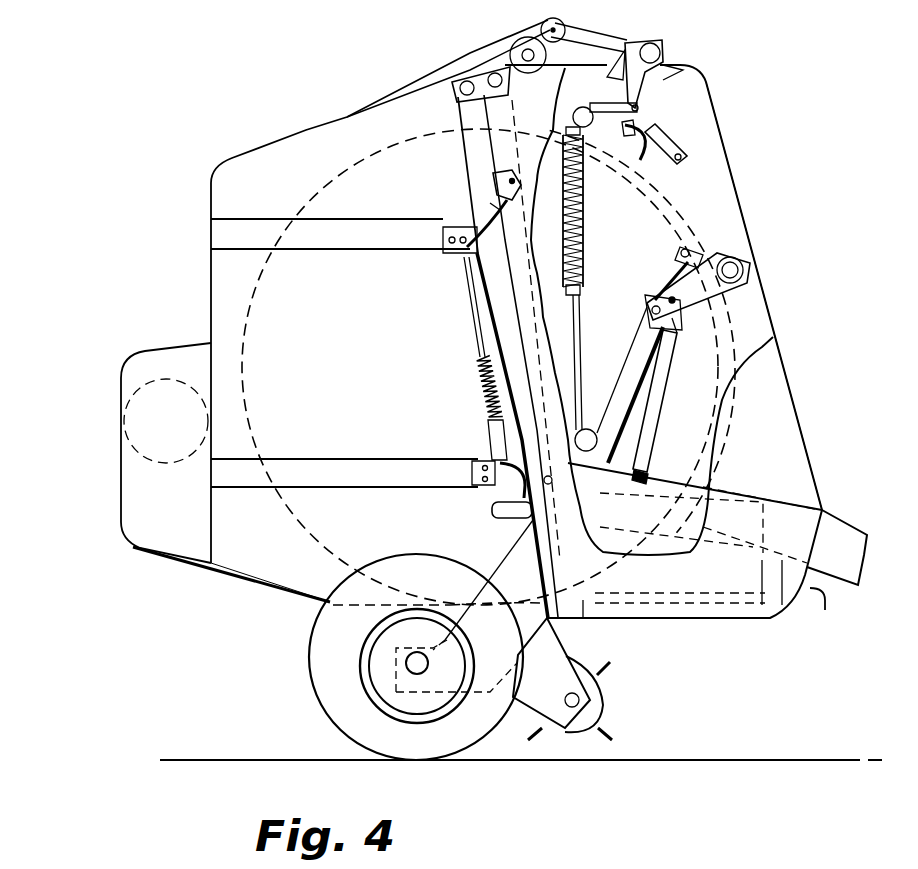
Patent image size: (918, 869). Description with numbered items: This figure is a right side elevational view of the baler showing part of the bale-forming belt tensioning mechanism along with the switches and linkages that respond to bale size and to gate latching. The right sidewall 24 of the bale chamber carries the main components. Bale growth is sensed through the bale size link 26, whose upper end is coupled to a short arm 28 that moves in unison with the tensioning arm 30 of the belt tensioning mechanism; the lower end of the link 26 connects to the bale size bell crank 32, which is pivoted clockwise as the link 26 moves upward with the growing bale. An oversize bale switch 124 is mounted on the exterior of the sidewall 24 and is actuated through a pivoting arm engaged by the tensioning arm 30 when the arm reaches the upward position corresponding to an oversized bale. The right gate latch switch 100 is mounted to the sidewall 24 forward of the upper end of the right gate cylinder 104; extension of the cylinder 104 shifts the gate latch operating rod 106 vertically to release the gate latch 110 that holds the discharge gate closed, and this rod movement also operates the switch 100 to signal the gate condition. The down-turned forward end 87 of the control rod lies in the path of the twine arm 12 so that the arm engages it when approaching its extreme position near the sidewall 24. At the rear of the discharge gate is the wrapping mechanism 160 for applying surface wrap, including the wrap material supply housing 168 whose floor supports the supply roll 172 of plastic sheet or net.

The twine arm 12 is at (700, 605).
The right sidewall 24 is at (583, 617).
The bale size link 26 is at (683, 273).
The short arm 28 is at (722, 250).
The tensioning arm 30 is at (697, 185).
The bale size bell crank 32 is at (660, 401).
The down-turned forward end 87 is at (825, 607).
The right gate latch switch 100 is at (493, 182).
The right gate cylinder 104 is at (492, 323).
The gate latch operating rod 106 is at (468, 308).
The gate latch 110 is at (485, 500).
The oversize bale switch 124 is at (650, 113).
The wrapping mechanism 160 is at (120, 553).
The wrap material supply roll box or housing 168 is at (143, 352).
The supply roll 172 is at (140, 388).